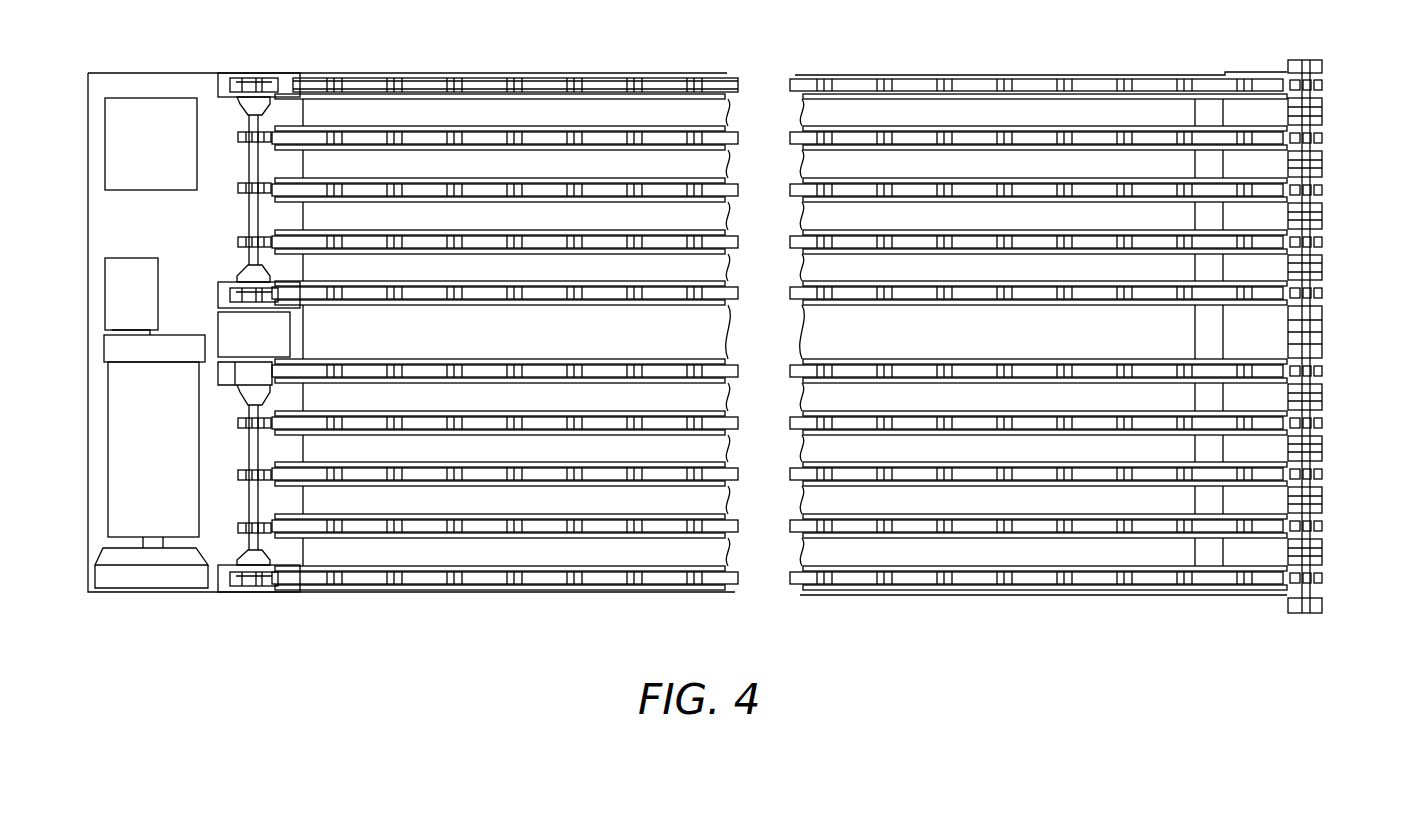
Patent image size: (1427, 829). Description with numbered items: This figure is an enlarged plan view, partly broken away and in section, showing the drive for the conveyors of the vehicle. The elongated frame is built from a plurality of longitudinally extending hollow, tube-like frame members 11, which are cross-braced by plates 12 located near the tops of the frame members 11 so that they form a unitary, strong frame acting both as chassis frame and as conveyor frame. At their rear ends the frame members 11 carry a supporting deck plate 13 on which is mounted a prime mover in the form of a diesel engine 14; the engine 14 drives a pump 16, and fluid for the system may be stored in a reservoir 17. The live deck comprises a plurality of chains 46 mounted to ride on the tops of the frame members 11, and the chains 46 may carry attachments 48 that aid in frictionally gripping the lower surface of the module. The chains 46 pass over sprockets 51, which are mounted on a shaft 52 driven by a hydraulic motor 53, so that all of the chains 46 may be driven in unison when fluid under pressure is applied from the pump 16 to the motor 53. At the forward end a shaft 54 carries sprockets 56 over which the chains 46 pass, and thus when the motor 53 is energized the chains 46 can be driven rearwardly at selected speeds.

The frame members 11 is at (1095, 130).
The plates 12 is at (440, 555).
The supporting deck plate 13 is at (128, 226).
The diesel engine 14 is at (165, 459).
The pump 16 is at (143, 304).
The reservoir 17 is at (160, 160).
The chains 46 is at (905, 85).
The attachments 48 is at (638, 78).
The sprockets 51 is at (238, 190).
The shaft 52 is at (248, 214).
The hydraulic motor 53 is at (266, 348).
The shaft 54 is at (1322, 372).
The sprockets 56 is at (1322, 87).